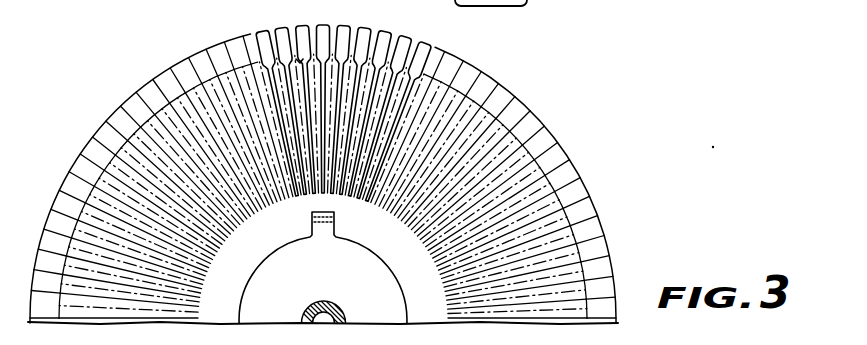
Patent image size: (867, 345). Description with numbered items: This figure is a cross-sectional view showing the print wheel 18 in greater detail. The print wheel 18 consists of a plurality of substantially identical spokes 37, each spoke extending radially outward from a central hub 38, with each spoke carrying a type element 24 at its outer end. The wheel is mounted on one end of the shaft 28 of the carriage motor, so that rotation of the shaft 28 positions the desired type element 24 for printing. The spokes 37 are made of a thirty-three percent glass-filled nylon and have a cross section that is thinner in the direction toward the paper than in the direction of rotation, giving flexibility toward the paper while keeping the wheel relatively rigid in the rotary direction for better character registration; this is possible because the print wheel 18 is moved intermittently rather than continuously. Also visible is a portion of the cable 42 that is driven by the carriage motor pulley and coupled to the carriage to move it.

The print wheel 18 is at (562, 146).
The type element 24 is at (304, 35).
The spokes 37 is at (300, 65).
The central hub 38 is at (371, 240).
The shaft 28 is at (316, 309).
The cable 42 is at (627, 0).